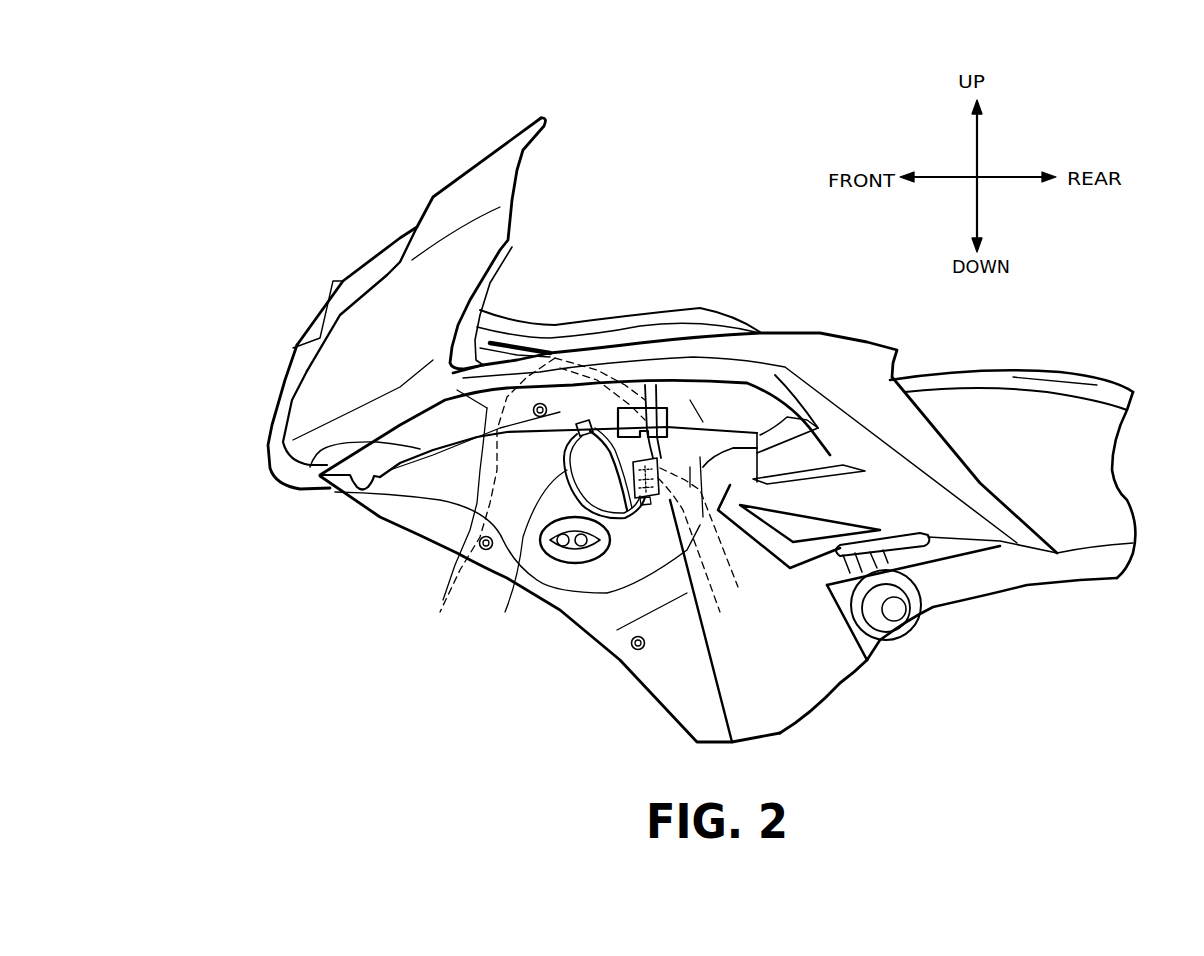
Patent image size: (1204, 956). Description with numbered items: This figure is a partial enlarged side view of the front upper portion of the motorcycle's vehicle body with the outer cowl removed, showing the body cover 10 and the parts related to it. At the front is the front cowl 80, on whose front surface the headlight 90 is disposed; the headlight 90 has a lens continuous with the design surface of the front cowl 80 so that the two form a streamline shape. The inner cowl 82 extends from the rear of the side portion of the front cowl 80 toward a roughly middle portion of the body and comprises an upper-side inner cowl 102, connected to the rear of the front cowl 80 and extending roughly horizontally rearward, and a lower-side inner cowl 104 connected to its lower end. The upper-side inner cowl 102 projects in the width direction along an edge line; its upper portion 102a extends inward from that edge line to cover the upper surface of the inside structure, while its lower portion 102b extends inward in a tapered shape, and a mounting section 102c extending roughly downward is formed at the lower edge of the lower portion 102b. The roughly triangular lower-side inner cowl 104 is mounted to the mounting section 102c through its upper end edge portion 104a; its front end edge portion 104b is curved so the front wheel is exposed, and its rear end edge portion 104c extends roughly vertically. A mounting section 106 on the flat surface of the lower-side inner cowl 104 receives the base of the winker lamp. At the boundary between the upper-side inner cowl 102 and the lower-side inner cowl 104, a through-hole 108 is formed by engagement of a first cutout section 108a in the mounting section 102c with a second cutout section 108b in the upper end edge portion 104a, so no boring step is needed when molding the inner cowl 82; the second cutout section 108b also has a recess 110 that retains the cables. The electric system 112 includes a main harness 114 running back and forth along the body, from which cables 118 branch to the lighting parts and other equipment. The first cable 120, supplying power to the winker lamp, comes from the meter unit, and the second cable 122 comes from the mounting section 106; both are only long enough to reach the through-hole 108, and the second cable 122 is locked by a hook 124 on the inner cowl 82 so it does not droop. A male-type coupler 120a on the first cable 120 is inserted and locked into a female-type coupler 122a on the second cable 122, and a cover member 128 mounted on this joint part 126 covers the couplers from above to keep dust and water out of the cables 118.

The body cover 10 is at (470, 157).
The front cowl 80 is at (493, 188).
The headlight 90 is at (288, 375).
The main harness 114 is at (514, 308).
The electric system 112 is at (618, 295).
The hook 124 is at (580, 421).
The through-hole 108 is at (622, 407).
The first cutout section 108a is at (670, 413).
The second cutout section 108b is at (755, 444).
The upper portion 102a is at (821, 343).
The upper end edge portion 104a is at (757, 433).
The cover member 128 is at (793, 485).
The recess 110 is at (642, 438).
The mounting section 102c is at (360, 441).
The lower portion 102b is at (457, 393).
The inner cowl 82 is at (290, 514).
The upper-side inner cowl 102 is at (313, 470).
The lower-side inner cowl 104 is at (403, 517).
The cable 118 is at (490, 594).
The first cable 120 is at (452, 511).
The second cable 122 is at (486, 502).
The mounting section 106 is at (583, 563).
The front end edge portion 104b is at (622, 655).
The rear end edge portion 104c is at (718, 682).
The male-type coupler 120a is at (663, 485).
The female-type coupler 122a is at (665, 503).
The joint part 126 is at (775, 588).